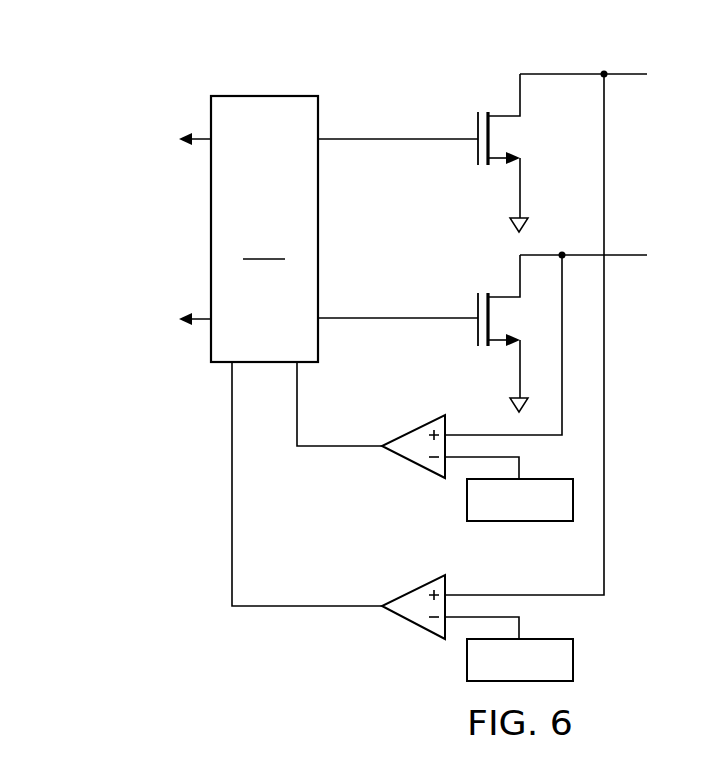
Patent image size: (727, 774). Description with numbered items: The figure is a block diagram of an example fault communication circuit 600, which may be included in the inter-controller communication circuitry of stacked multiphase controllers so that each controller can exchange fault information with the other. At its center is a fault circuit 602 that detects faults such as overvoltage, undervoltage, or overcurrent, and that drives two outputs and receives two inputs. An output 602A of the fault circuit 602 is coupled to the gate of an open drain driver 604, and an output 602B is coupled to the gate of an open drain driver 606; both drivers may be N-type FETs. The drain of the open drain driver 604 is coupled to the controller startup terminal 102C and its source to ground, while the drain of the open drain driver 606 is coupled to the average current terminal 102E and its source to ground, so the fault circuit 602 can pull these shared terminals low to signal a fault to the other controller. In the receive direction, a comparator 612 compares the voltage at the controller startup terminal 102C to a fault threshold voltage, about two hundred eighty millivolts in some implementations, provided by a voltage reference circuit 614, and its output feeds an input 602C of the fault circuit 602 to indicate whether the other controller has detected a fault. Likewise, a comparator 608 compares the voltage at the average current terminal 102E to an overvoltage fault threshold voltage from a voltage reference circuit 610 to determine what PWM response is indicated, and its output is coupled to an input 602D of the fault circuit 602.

The fault communication circuit 600 is at (265, 70).
The fault circuit 602 is at (175, 229).
The output of the fault circuit 602A is at (352, 117).
The output of the fault circuit 602B is at (352, 296).
The input of the fault circuit 602C is at (226, 367).
The input of the fault circuit 602D is at (303, 367).
The open drain driver 604 is at (476, 128).
The open drain driver 606 is at (476, 308).
The comparator 608 is at (411, 464).
The voltage reference circuit 610 is at (537, 522).
The comparator 612 is at (411, 624).
The voltage reference circuit 614 is at (574, 659).
The controller startup terminal 102C is at (625, 72).
The average current terminal 102E is at (625, 253).